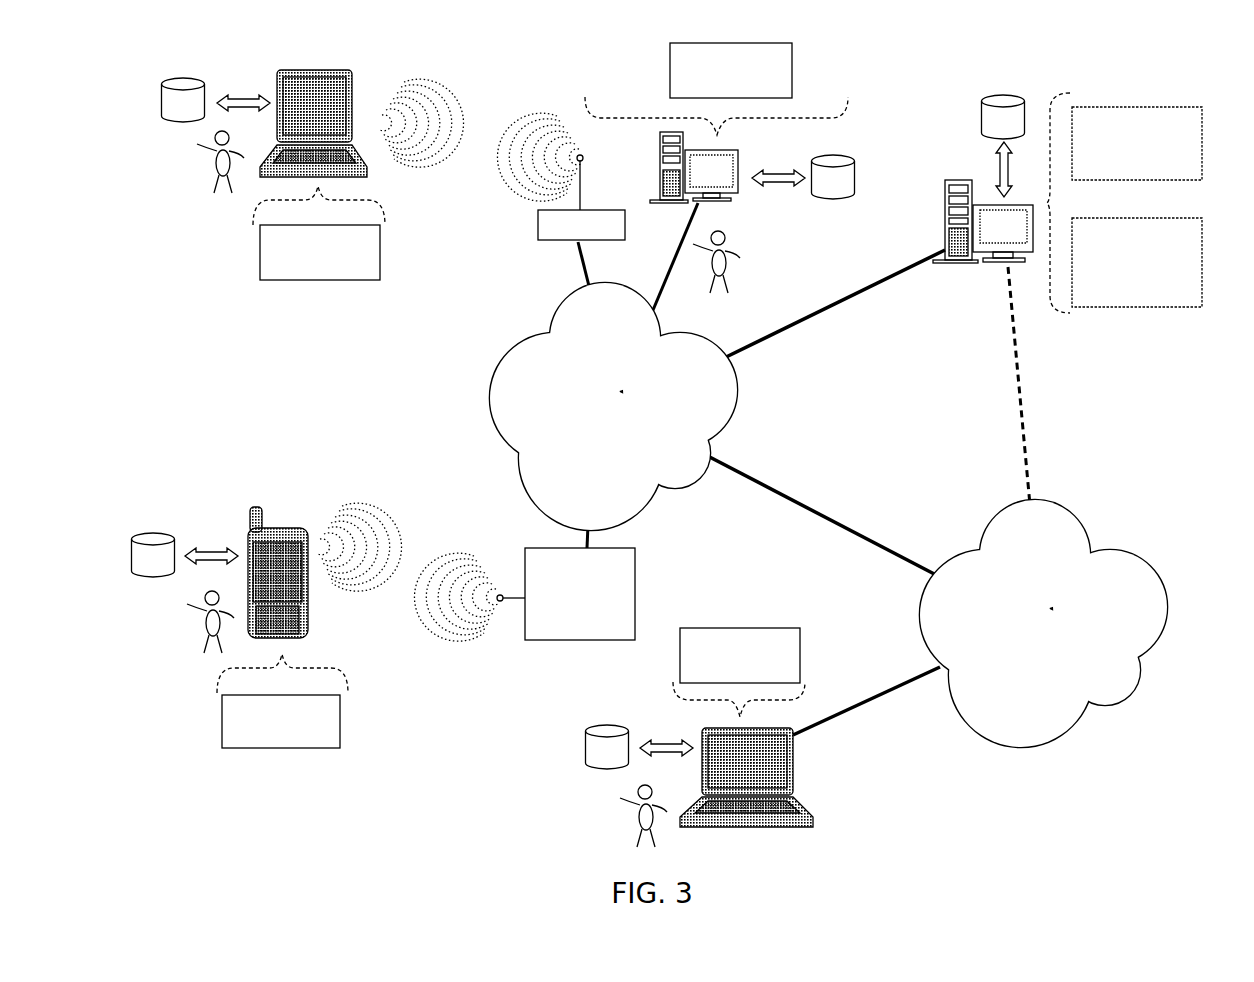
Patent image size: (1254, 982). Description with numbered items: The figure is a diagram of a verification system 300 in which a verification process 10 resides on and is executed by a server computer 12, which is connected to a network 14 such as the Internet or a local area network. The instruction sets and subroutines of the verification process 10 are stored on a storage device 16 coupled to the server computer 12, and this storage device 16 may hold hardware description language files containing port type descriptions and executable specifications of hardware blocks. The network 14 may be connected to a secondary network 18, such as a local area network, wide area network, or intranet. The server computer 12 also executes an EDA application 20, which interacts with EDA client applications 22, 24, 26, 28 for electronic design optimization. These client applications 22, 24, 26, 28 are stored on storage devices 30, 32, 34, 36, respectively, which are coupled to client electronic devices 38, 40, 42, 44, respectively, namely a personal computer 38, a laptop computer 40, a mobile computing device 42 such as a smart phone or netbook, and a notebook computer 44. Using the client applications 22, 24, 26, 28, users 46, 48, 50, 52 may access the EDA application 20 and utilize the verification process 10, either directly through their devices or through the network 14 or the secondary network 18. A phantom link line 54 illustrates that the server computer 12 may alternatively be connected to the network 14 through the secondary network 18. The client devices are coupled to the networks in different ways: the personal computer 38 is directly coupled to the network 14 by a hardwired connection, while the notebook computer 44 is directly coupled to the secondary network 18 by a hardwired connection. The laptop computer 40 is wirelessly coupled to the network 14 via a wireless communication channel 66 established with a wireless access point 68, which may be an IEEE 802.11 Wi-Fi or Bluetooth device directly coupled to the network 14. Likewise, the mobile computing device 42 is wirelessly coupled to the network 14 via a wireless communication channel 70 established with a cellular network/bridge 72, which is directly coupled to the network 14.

The verification process 10 is at (1203, 253).
The server computer 12 is at (940, 208).
The network 14 is at (613, 406).
The storage device 16 is at (1003, 117).
The secondary network 18 is at (1043, 623).
The EDA application 20 is at (1203, 142).
The client application 22 is at (668, 80).
The client application 24 is at (380, 255).
The client application 26 is at (340, 718).
The client application 28 is at (800, 658).
The storage device 30 is at (833, 177).
The storage device 32 is at (183, 100).
The storage device 34 is at (153, 555).
The storage device 36 is at (607, 747).
The personal computer 38 is at (738, 163).
The laptop computer 40 is at (352, 92).
The mobile computing device 42 is at (312, 582).
The notebook computer 44 is at (793, 772).
The user 46 is at (742, 258).
The user 48 is at (190, 155).
The user 50 is at (190, 607).
The user 52 is at (613, 807).
The phantom link line 54 is at (1015, 370).
The wireless communication channel 66 is at (488, 108).
The wireless access point 68 is at (532, 223).
The wireless communication channel 70 is at (422, 548).
The cellular network/bridge 72 is at (635, 563).
The verification system 300 is at (152, 85).